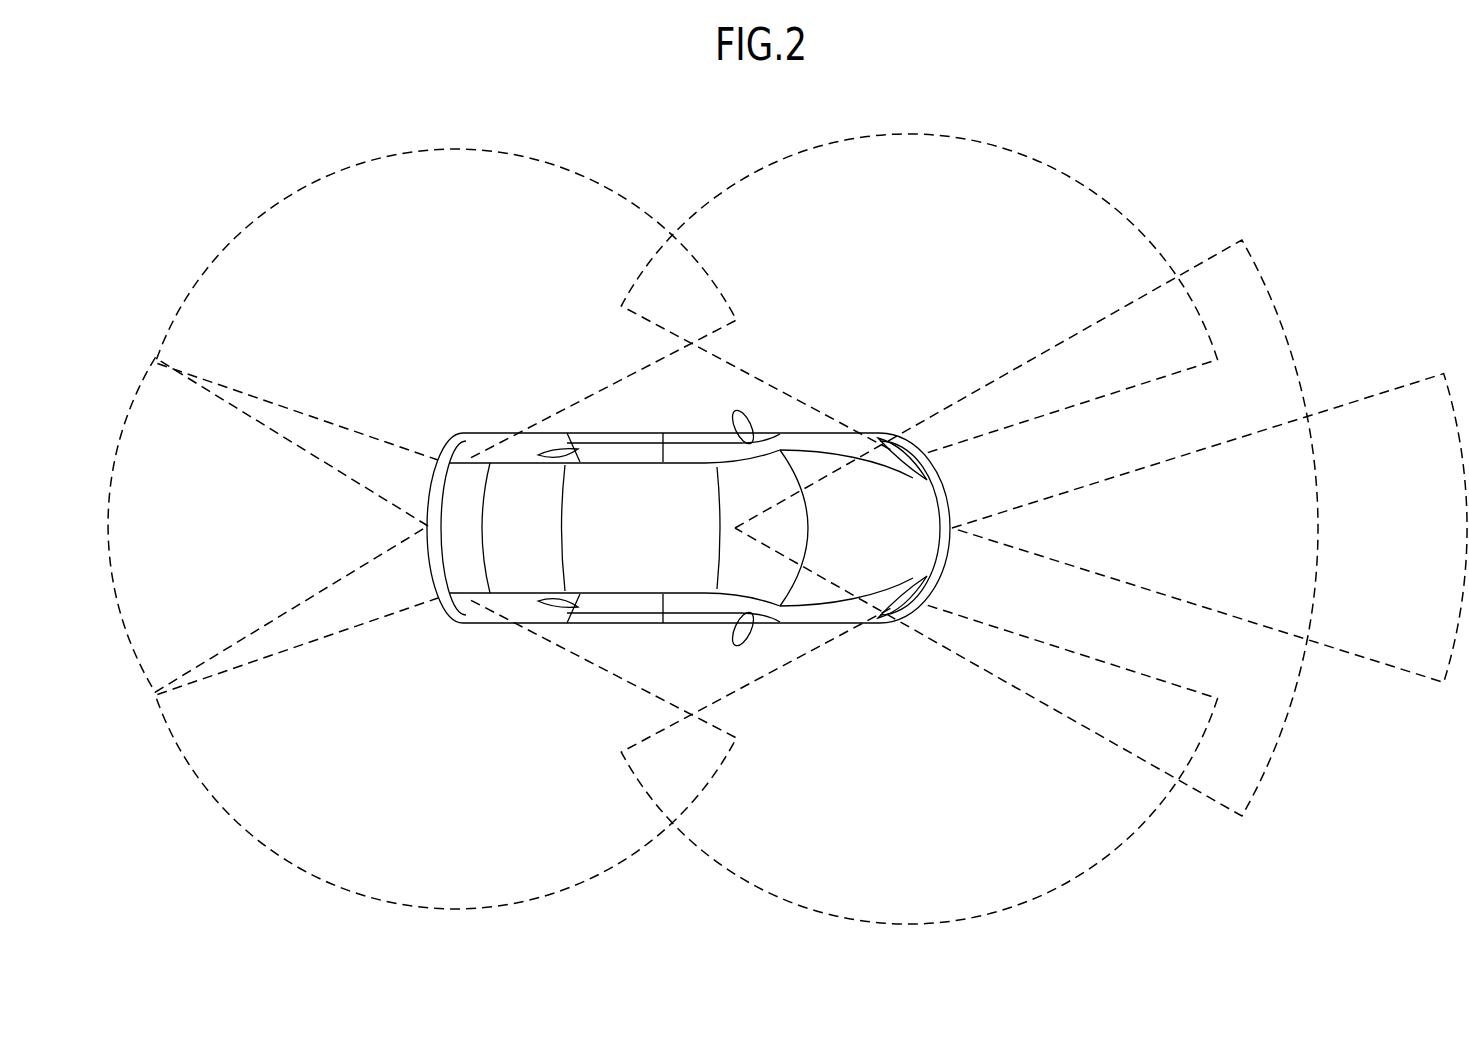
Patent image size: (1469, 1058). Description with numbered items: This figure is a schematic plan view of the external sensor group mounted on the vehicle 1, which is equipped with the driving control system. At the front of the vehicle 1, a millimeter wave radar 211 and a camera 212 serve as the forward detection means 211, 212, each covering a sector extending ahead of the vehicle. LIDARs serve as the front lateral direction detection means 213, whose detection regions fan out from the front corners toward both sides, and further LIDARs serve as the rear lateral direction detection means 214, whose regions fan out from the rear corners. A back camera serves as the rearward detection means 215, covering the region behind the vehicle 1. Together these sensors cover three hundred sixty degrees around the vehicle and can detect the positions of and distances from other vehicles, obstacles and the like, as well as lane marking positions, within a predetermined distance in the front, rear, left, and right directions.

The vehicle 1 is at (648, 501).
The millimeter wave radar 211 is at (1402, 386).
The camera 212 is at (1270, 301).
The front lateral direction detection means 213 is at (1087, 185).
The rear lateral direction detection means 214 is at (263, 213).
The rearward detection means 215 is at (133, 374).